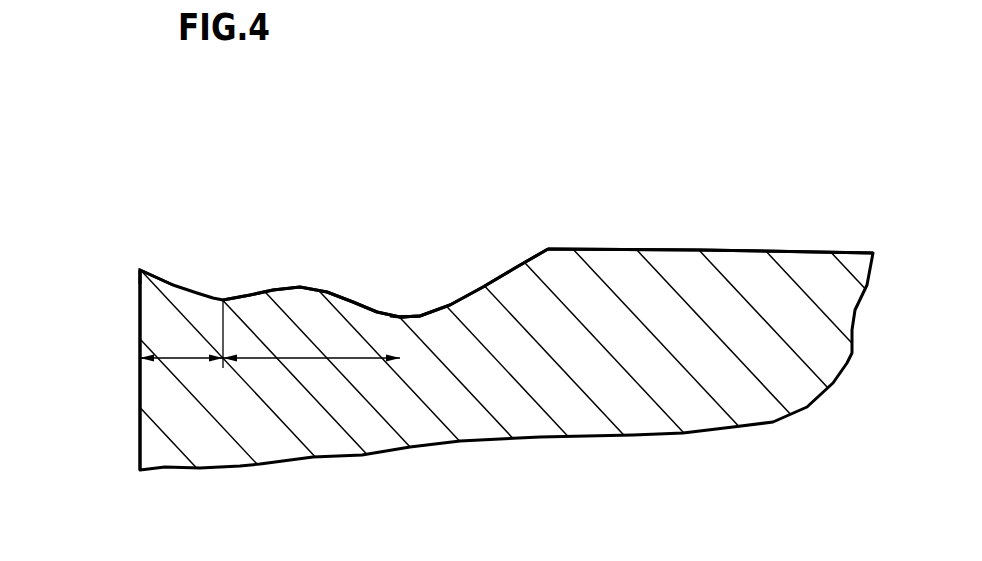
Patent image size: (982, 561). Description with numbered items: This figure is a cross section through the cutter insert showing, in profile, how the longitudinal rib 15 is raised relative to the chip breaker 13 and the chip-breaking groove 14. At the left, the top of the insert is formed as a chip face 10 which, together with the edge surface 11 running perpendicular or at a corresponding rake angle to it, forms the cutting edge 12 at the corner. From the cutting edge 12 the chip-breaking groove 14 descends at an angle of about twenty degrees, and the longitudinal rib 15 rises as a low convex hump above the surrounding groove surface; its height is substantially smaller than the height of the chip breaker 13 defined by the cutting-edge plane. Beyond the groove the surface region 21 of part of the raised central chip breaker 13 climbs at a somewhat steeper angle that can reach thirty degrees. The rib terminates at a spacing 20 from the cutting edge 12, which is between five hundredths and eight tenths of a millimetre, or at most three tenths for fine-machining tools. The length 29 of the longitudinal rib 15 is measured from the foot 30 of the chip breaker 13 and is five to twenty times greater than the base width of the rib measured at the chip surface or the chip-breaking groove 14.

The chip face 10 is at (593, 174).
The edge surface 11 is at (140, 430).
The cutting edge 12 is at (128, 260).
The chip breaker 13 is at (742, 250).
The chip-breaking groove 14 is at (397, 250).
The longitudinal rib 15 is at (301, 287).
The spacing 20 is at (185, 358).
The surface region 21 is at (497, 317).
The length 29 is at (318, 358).
The foot 30 is at (401, 330).